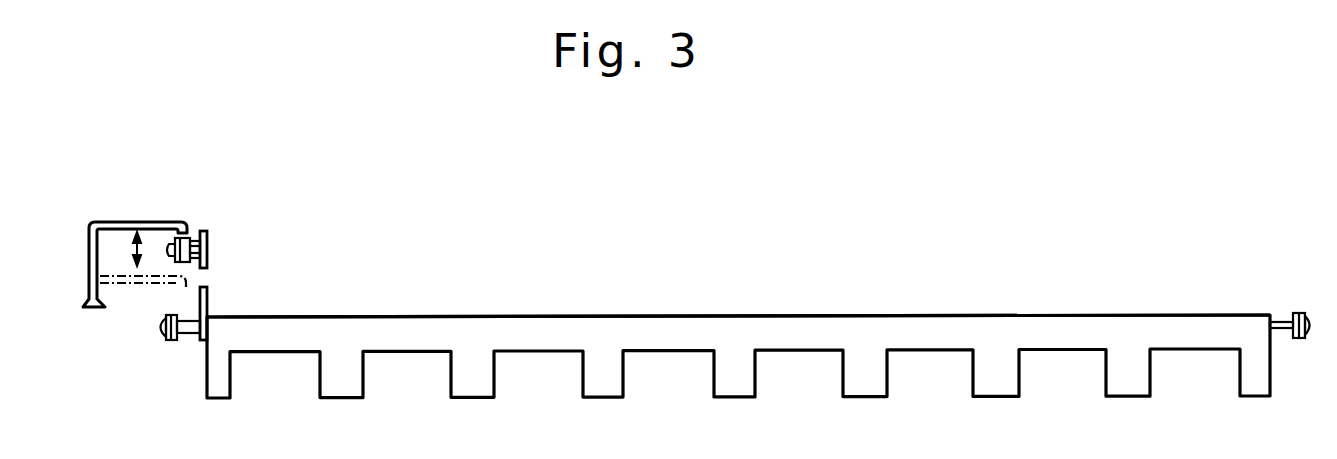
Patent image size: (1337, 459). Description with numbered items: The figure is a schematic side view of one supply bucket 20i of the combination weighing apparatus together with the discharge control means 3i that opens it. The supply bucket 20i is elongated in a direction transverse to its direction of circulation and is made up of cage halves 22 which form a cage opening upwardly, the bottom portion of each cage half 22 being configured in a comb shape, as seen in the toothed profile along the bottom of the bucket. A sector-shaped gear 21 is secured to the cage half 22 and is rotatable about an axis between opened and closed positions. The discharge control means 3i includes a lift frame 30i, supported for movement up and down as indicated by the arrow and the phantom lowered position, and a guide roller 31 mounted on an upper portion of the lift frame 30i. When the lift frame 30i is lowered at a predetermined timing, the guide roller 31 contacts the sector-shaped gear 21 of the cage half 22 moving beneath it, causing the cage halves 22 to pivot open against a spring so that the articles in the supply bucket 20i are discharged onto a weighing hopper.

The discharge control means 3i is at (193, 250).
The lift frame 30i is at (128, 222).
The guide roller 31 is at (211, 213).
The sector-shaped gear 21 is at (207, 297).
The cage half 22 is at (543, 328).
The supply bucket 20i is at (773, 328).